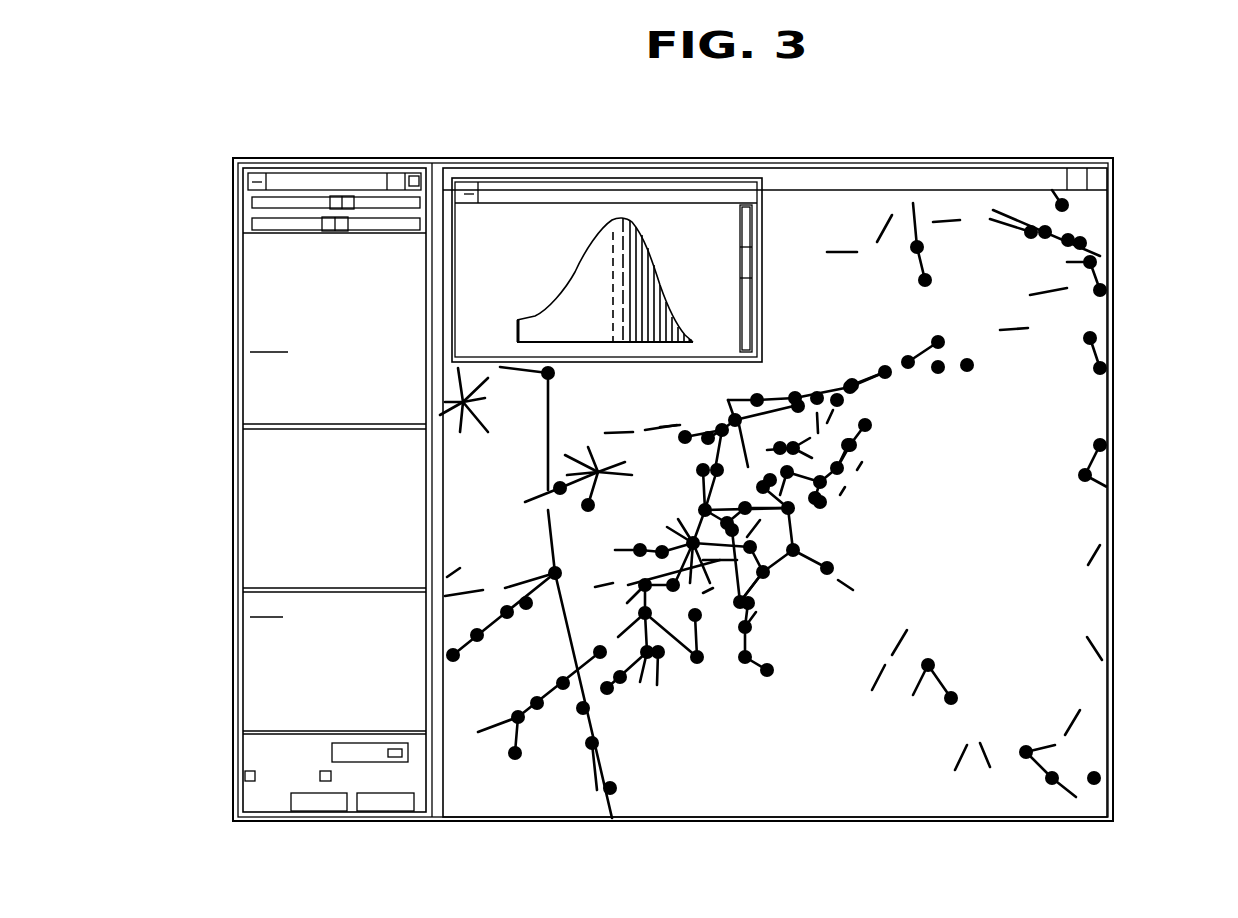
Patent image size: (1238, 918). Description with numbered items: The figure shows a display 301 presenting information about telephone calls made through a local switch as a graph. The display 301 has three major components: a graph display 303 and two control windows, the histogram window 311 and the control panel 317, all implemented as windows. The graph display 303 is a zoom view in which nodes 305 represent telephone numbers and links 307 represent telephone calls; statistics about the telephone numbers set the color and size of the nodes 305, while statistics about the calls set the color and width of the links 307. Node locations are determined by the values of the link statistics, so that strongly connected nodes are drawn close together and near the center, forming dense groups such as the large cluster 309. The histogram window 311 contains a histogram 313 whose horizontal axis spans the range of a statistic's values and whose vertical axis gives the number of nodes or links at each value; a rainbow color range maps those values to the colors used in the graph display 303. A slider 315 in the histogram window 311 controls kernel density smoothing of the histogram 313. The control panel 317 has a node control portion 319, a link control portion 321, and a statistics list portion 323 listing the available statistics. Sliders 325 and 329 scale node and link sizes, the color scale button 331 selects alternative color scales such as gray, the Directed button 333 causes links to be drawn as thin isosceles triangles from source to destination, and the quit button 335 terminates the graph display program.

The display 301 is at (1222, 312).
The graph display 303 is at (1108, 583).
The nodes 305 is at (1085, 487).
The links 307 is at (1085, 470).
The cluster 309 is at (760, 600).
The histogram window 311 is at (690, 188).
The histogram 313 is at (588, 268).
The slider 315 is at (755, 260).
The control panel 317 is at (344, 180).
The node control portion 319 is at (245, 340).
The link control portion 321 is at (247, 500).
The statistics list portion 323 is at (250, 667).
The slider 325 is at (252, 198).
The slider 329 is at (252, 221).
The color scale button 331 is at (409, 756).
The Directed button 333 is at (245, 777).
The quit button 335 is at (302, 815).